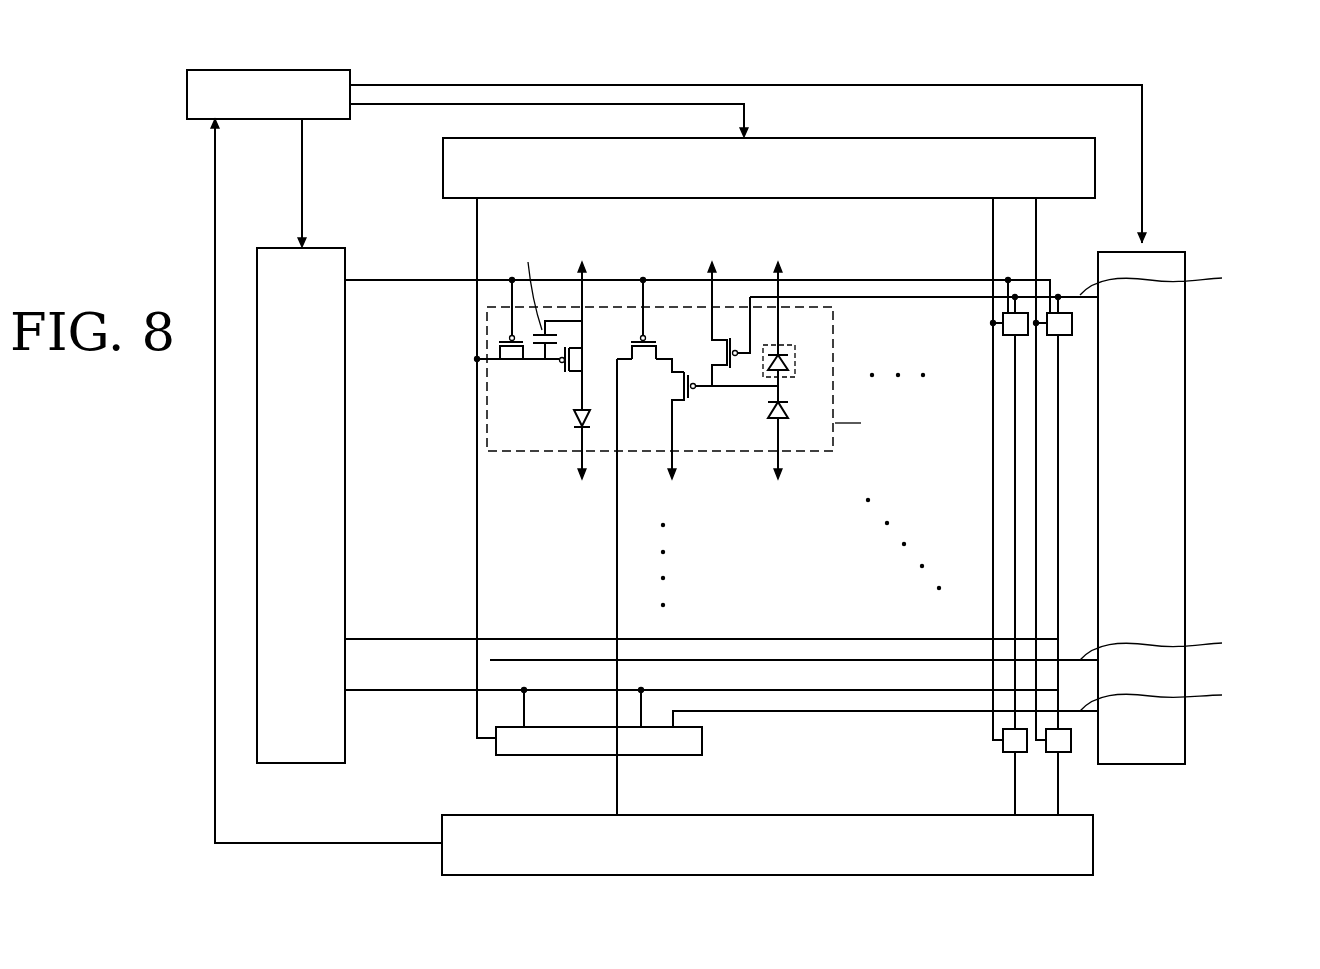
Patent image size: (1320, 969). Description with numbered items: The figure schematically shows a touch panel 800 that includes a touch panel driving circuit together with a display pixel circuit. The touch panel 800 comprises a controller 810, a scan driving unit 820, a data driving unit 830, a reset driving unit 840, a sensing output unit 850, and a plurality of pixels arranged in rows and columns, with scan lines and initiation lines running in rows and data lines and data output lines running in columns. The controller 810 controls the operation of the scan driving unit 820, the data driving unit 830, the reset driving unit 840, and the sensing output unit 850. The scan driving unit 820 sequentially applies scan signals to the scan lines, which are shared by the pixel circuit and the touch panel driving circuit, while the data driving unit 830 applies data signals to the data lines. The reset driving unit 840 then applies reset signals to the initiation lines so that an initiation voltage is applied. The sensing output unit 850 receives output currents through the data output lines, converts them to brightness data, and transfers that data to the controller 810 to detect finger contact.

The touch panel 800 is at (1192, 106).
The controller 810 is at (302, 69).
The scan driving unit 820 is at (345, 427).
The data driving unit 830 is at (958, 137).
The reset driving unit 840 is at (1185, 428).
The sensing output unit 850 is at (823, 815).